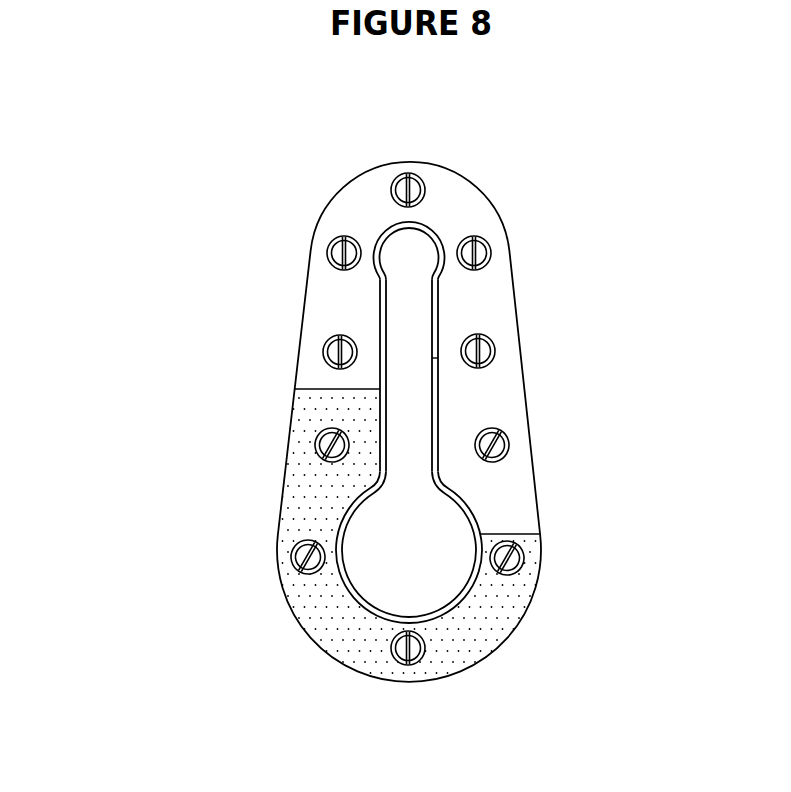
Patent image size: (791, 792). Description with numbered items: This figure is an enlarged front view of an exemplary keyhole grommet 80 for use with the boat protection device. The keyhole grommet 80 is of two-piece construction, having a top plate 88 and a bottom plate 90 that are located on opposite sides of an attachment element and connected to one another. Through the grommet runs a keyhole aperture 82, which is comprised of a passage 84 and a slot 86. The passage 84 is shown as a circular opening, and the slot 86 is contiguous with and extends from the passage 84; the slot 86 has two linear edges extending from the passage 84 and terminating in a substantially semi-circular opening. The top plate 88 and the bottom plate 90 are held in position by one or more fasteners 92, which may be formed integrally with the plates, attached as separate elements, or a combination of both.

The keyhole grommet 80 is at (158, 216).
The keyhole aperture 82 is at (451, 394).
The passage 84 is at (427, 548).
The slot 86 is at (412, 317).
The top plate 88 is at (318, 323).
The bottom plate 90 is at (293, 518).
The fasteners 92 is at (417, 660).